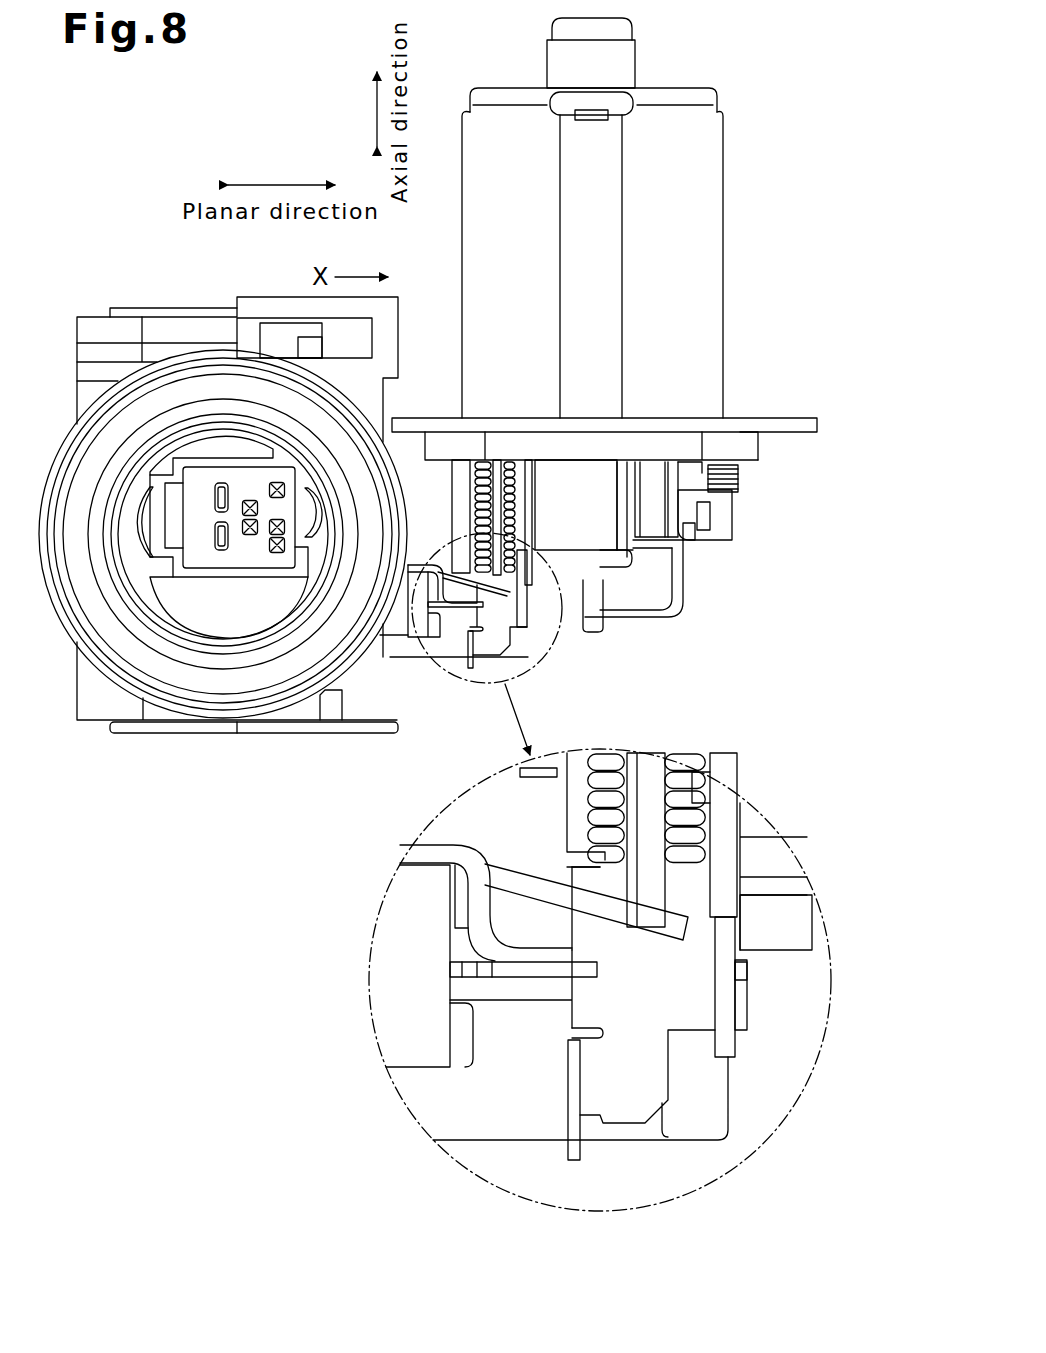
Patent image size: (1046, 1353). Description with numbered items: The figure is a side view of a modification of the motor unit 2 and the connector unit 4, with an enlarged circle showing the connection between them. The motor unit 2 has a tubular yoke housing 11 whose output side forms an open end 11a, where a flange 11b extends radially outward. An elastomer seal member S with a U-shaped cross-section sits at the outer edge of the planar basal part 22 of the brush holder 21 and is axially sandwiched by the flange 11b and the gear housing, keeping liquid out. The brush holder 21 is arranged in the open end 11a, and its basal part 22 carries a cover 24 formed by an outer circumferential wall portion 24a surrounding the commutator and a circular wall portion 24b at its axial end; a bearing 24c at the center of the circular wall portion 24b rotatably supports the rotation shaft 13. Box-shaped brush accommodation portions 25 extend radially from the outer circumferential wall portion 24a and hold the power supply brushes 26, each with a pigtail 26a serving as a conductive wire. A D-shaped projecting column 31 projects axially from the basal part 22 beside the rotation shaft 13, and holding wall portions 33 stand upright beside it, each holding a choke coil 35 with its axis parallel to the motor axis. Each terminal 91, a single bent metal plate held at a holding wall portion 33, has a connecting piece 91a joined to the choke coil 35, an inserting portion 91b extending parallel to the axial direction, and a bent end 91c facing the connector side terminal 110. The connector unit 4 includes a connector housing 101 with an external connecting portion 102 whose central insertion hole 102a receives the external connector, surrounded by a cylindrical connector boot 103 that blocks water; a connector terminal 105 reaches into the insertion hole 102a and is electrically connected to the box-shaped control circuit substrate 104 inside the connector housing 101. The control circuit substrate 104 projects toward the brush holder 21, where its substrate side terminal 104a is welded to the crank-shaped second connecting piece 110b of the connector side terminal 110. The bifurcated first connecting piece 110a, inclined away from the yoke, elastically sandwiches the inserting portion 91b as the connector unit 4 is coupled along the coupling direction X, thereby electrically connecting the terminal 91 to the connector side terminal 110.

The motor unit 2 is at (708, 86).
The yoke housing 11 is at (717, 152).
The open end 11a is at (680, 442).
The flange 11b is at (787, 419).
The seal member S is at (757, 448).
The connector unit 4 is at (92, 314).
The connector housing 101 is at (172, 325).
The external connecting portion 102 is at (286, 580).
The insertion hole 102a is at (243, 562).
The connector boot 103 is at (52, 614).
The control circuit substrate 104 is at (393, 640).
The substrate side terminal 104a is at (543, 1010).
The connector terminal 105 is at (215, 540).
The rotation shaft 13 is at (600, 632).
The brush holder 21 is at (763, 586).
The basal part 22 is at (590, 458).
The cover 24 is at (654, 548).
The outer circumferential wall portion 24a is at (550, 470).
The circular wall portion 24b is at (570, 575).
The bearing 24c is at (588, 550).
The brush accommodation portion 25 is at (652, 468).
The power supply brush 26 is at (702, 506).
The pigtail 26a is at (686, 601).
The projecting column 31 is at (452, 500).
The holding wall portion 33 is at (477, 476).
The choke coil 35 is at (508, 461).
The terminal 91 is at (625, 1116).
The connecting piece 91a is at (742, 997).
The inserting portion 91b is at (572, 925).
The bent end 91c is at (572, 870).
The connector side terminal 110 is at (467, 845).
The first connecting piece 110a is at (607, 913).
The second connecting piece 110b is at (537, 978).